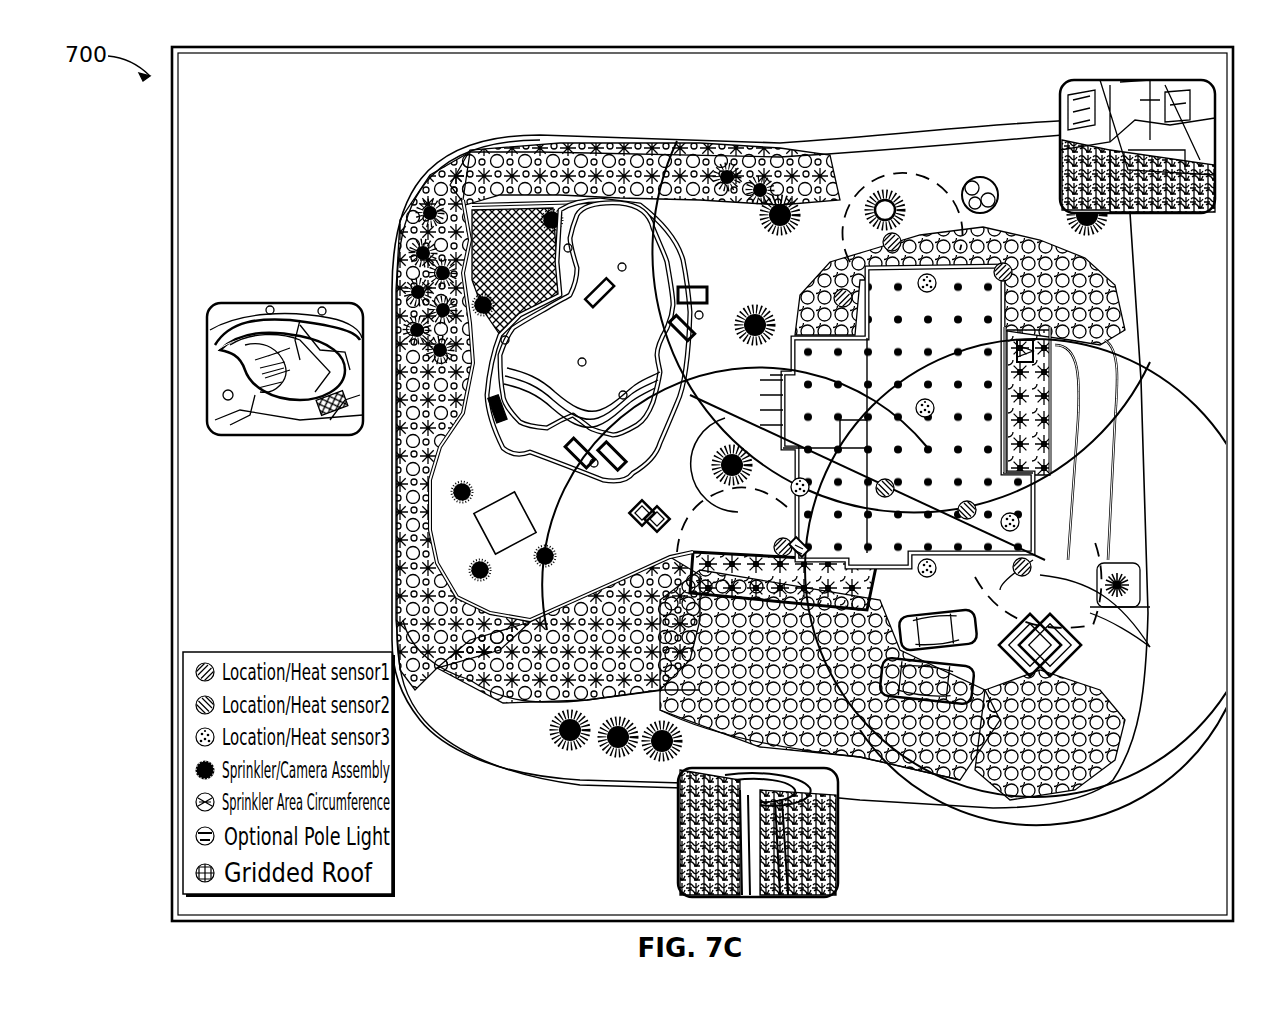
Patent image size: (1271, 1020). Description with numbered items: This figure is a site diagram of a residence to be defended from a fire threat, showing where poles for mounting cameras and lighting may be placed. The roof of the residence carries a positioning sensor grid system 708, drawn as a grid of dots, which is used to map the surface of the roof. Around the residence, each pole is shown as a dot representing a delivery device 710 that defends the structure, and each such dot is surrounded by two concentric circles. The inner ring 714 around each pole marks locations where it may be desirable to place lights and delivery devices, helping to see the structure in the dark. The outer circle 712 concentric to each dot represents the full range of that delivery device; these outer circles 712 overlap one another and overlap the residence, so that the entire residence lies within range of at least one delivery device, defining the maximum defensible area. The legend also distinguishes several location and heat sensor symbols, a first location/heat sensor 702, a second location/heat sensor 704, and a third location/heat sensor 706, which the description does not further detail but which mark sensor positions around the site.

The location/heat sensor 1 702 is at (892, 242).
The location/heat sensor 2 704 is at (888, 486).
The location/heat sensor 3 706 is at (800, 487).
The positioning sensor grid system 708 is at (1062, 428).
The delivery device 710 is at (797, 545).
The outer circle 712 is at (677, 141).
The inner ring 714 is at (912, 168).